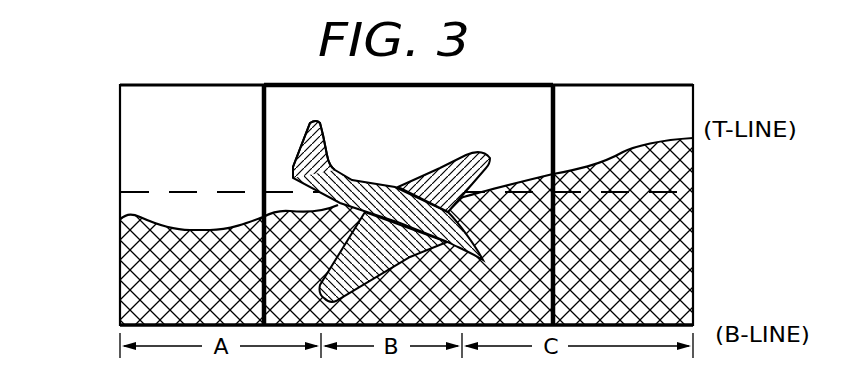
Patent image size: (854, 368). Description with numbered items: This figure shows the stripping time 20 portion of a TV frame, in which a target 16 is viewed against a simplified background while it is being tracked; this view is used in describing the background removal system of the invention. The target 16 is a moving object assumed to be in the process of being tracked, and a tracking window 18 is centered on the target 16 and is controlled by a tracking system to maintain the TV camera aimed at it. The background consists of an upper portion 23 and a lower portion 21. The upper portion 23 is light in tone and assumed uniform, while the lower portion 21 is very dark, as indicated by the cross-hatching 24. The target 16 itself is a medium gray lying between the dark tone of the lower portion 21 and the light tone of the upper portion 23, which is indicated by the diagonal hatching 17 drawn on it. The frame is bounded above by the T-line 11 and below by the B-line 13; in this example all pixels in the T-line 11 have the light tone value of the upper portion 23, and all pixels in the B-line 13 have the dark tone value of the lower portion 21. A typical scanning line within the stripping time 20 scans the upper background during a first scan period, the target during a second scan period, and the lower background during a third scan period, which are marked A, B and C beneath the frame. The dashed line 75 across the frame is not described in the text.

The T-line 11 is at (663, 88).
The B-line 13 is at (693, 312).
The target 16 is at (298, 147).
The diagonal hatching 17 is at (468, 170).
The tracking window 18 is at (381, 178).
The stripping time 20 is at (120, 158).
The lower portion 21 is at (148, 218).
The upper portion 23 is at (140, 108).
The cross-hatching 24 is at (120, 262).
The threshold line 75 is at (222, 191).